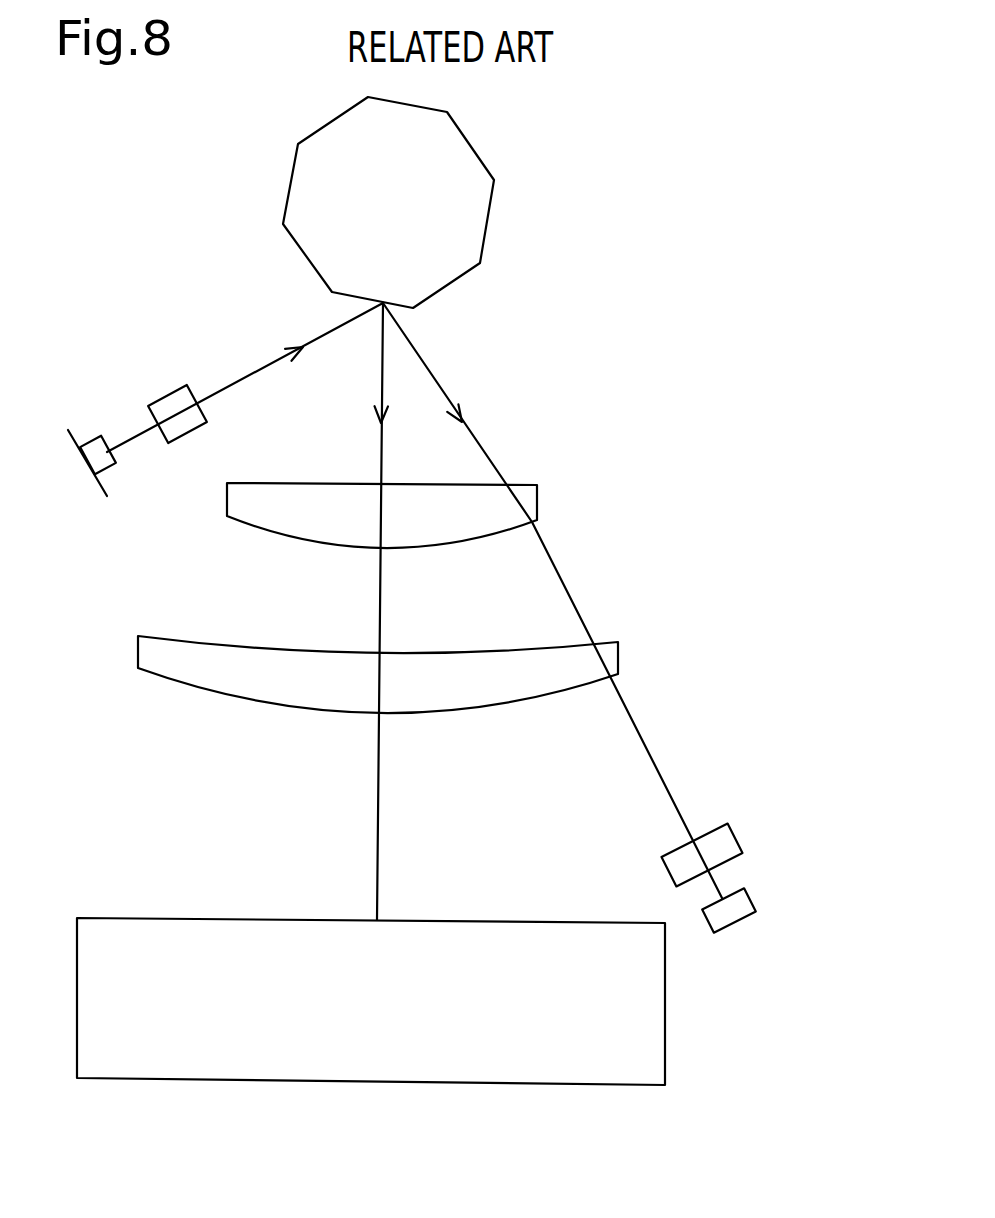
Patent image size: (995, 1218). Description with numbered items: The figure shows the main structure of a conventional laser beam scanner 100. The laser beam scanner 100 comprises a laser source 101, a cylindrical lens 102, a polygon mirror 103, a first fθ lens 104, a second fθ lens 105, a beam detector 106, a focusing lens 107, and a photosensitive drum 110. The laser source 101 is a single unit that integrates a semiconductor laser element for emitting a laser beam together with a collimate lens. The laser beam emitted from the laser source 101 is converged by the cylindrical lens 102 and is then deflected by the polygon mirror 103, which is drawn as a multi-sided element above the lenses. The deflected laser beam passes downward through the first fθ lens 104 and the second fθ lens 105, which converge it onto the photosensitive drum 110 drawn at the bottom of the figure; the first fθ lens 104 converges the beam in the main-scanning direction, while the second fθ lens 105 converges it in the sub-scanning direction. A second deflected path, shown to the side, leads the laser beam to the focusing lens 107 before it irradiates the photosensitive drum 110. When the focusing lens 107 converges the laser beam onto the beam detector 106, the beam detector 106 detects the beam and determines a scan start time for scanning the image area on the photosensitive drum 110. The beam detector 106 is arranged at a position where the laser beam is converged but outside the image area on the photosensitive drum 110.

The laser beam scanner 100 is at (667, 297).
The laser source 101 is at (92, 437).
The cylindrical lens 102 is at (178, 390).
The polygon mirror 103 is at (475, 152).
The first fθ lens 104 is at (537, 505).
The second fθ lens 105 is at (620, 655).
The beam detector 106 is at (755, 902).
The focusing lens 107 is at (737, 837).
The photosensitive drum 110 is at (197, 918).